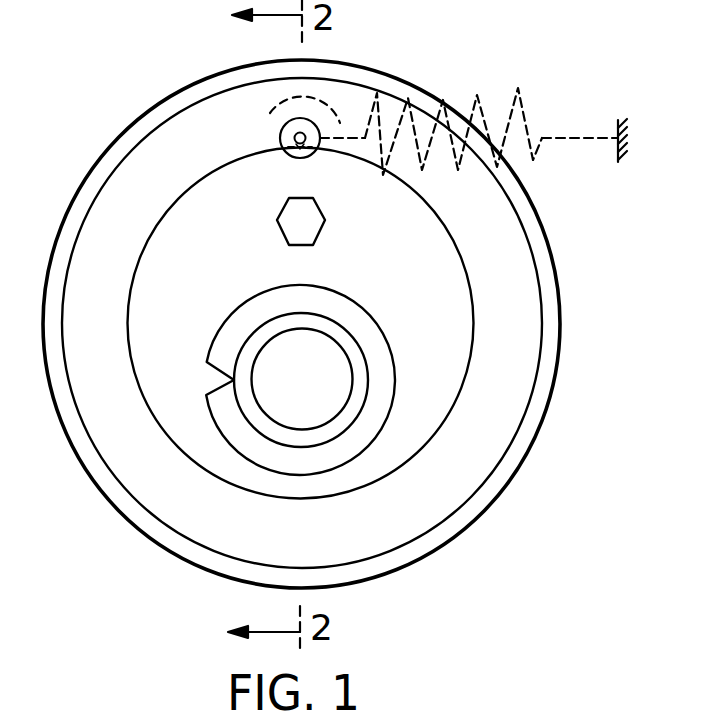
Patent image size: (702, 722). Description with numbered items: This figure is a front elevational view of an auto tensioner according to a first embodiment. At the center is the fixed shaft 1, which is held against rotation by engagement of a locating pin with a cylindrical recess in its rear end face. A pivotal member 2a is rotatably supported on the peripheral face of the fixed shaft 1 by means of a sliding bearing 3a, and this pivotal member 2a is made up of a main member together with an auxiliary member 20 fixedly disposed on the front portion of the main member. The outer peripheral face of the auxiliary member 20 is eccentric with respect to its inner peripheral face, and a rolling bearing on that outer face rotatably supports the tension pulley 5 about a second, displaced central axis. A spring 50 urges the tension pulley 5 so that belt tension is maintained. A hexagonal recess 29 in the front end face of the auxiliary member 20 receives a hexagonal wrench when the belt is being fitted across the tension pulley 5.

The fixed shaft 1 is at (332, 432).
The pivotal member 2a is at (470, 302).
The sliding bearing 3a is at (378, 411).
The tension pulley 5 is at (532, 203).
The auxiliary member 20 is at (453, 360).
The hexagonal recess 29 is at (302, 206).
The spring 50 is at (537, 112).